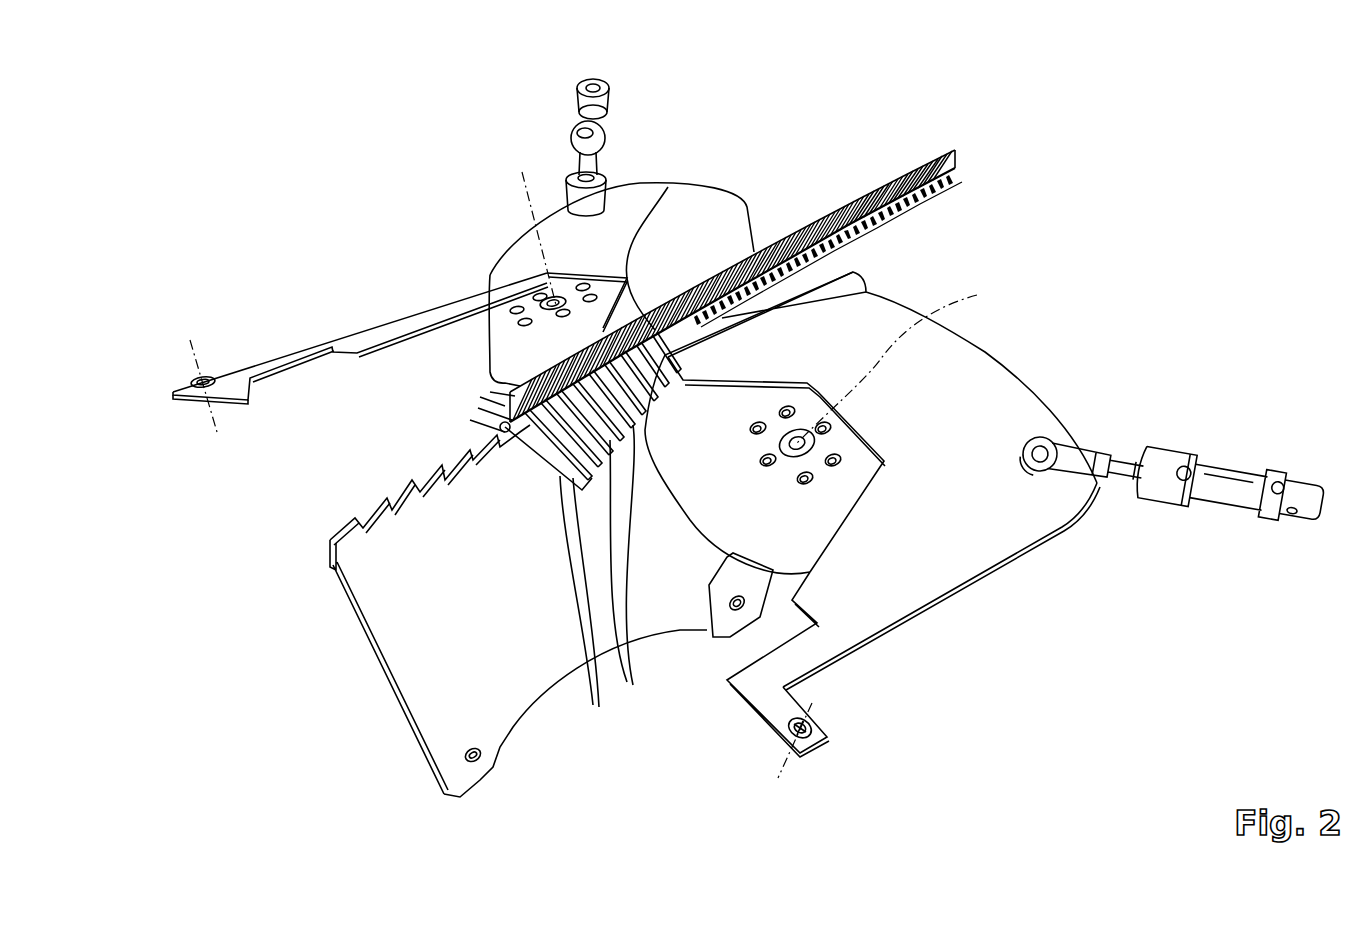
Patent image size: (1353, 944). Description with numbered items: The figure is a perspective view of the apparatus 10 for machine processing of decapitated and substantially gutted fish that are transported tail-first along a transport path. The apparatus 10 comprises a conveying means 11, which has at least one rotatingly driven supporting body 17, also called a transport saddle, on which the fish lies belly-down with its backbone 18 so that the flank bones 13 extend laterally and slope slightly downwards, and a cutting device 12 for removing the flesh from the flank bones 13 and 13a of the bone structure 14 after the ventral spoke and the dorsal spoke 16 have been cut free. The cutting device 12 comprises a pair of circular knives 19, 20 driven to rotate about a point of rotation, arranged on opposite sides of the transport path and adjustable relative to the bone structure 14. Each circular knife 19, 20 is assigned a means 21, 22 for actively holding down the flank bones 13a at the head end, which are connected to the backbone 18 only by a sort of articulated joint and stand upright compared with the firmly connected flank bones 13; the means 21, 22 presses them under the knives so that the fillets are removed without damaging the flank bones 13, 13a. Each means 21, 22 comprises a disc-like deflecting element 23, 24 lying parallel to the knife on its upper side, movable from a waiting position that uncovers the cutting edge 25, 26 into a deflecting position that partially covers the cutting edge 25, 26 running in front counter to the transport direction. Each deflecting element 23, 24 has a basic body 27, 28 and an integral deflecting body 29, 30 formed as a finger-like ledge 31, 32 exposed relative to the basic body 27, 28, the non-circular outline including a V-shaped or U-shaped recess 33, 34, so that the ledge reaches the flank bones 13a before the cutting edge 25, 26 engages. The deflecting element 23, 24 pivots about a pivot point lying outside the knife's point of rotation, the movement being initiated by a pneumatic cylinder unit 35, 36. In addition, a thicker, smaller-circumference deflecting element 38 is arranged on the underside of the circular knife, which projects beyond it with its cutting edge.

The apparatus 10 is at (1246, 143).
The conveying means 11 is at (502, 618).
The cutting device 12 is at (876, 402).
The flank bones 13 is at (467, 401).
The flank bones 13a is at (497, 418).
The bone structure 14 is at (533, 470).
The dorsal spoke 16 is at (770, 242).
The supporting body 17 is at (395, 583).
The backbone 18 is at (487, 430).
The circular knife 19 is at (710, 510).
The circular knife 20 is at (358, 357).
The means for holding down flank bones 21 is at (913, 630).
The means for holding down flank bones 22 is at (408, 268).
The deflecting element 23 is at (977, 497).
The deflecting element 24 is at (513, 248).
The cutting edge 25 is at (713, 640).
The cutting edge 26 is at (488, 362).
The basic body 27 is at (887, 562).
The basic body 28 is at (398, 307).
The deflecting body 29 is at (772, 352).
The deflecting body 30 is at (662, 275).
The finger-like ledge 31 is at (703, 362).
The finger-like ledge 32 is at (665, 187).
The recess 33 is at (831, 503).
The recess 34 is at (473, 318).
The pneumatic cylinder unit 35 is at (1290, 438).
The pneumatic cylinder unit 36 is at (560, 102).
The deflecting element 38 is at (490, 275).